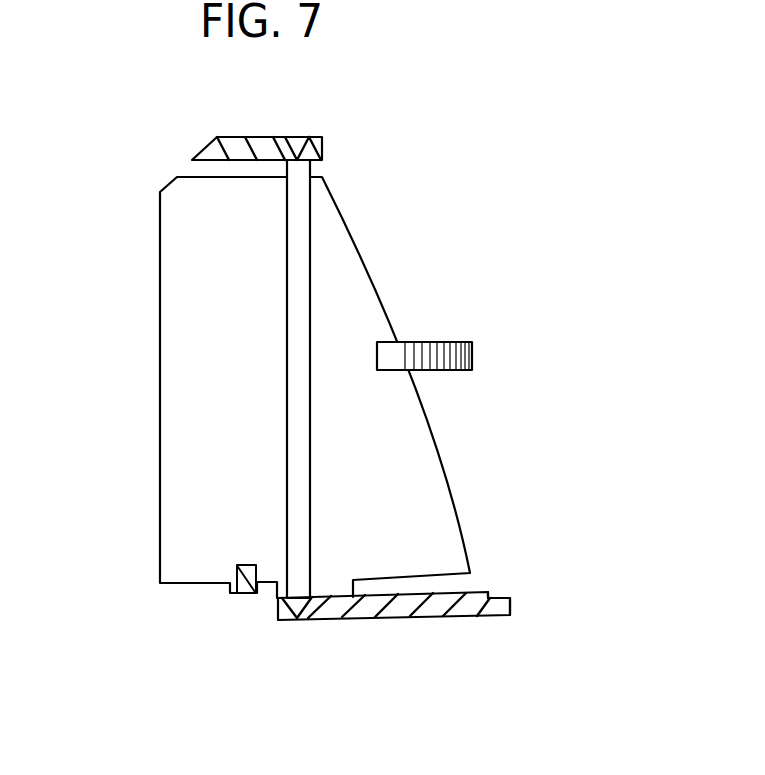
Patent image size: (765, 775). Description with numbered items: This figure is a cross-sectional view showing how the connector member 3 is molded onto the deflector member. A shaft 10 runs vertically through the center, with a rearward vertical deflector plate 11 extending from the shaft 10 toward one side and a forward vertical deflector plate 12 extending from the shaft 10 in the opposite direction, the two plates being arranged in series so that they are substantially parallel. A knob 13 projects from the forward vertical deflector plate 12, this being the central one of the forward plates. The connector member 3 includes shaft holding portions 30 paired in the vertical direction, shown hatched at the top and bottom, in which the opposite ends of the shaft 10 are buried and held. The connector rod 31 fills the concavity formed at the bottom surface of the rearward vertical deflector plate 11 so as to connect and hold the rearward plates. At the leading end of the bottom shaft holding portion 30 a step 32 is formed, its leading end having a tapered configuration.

The connector member 3 is at (467, 622).
The shaft 10 is at (300, 238).
The rearward vertical deflector plate 11 is at (185, 322).
The forward vertical deflector plate 12 is at (433, 503).
The knob 13 is at (473, 352).
The shaft holding portion 30 is at (237, 137).
The connector rod 31 is at (240, 595).
The step 32 is at (497, 594).